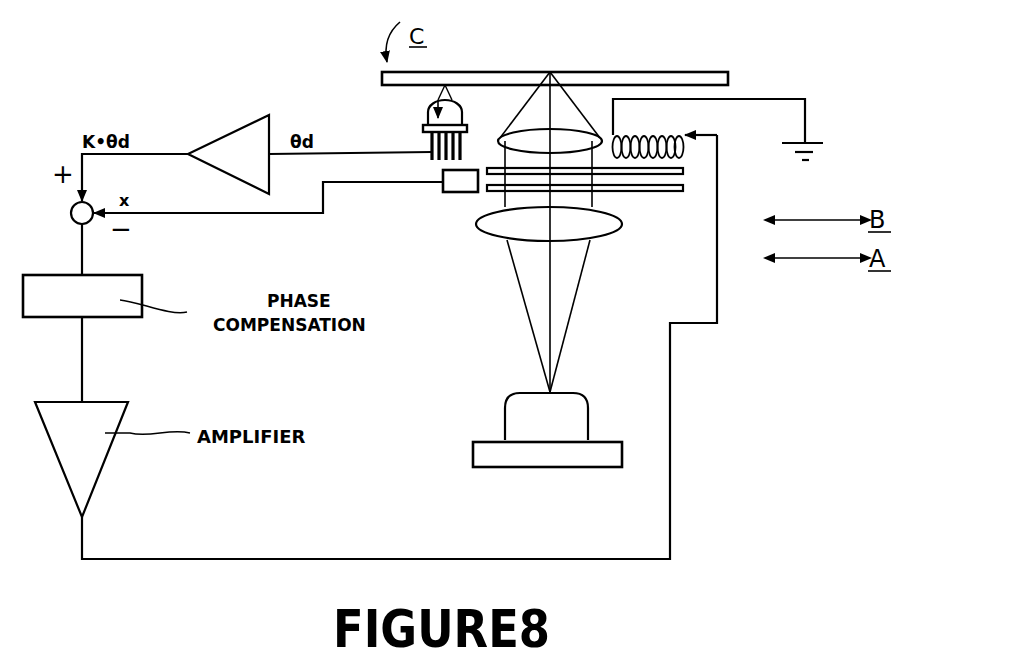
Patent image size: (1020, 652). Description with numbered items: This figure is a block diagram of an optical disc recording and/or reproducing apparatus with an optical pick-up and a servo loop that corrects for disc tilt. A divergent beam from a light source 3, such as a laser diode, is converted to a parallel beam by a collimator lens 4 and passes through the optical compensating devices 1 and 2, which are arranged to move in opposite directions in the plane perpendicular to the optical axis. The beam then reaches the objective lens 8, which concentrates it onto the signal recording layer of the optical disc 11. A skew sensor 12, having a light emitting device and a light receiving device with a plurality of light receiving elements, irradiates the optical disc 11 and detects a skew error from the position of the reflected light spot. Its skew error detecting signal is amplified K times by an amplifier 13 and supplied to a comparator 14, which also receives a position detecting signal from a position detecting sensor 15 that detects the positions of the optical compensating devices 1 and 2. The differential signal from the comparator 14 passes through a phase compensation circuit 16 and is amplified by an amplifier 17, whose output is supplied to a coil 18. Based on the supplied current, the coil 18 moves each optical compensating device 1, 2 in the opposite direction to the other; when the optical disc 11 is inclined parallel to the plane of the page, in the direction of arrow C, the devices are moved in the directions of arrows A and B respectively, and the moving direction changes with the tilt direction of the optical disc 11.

The optical compensating device 1 is at (683, 192).
The optical compensating device 2 is at (683, 170).
The light source 3 is at (508, 423).
The collimator lens 4 is at (492, 230).
The objective lens 8 is at (592, 141).
The optical disc 11 is at (695, 72).
The skew sensor 12 is at (456, 108).
The amplifier 13 is at (257, 130).
The comparator 14 is at (90, 222).
The position detecting sensor 15 is at (453, 193).
The phase compensation circuit 16 is at (115, 317).
The amplifier 17 is at (98, 455).
The coil 18 is at (668, 138).